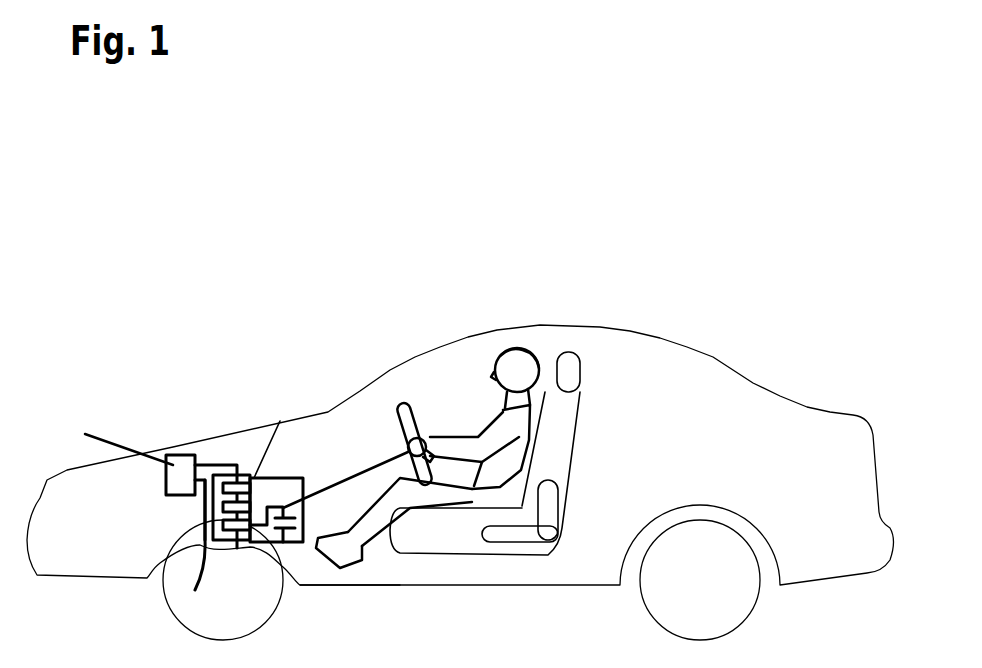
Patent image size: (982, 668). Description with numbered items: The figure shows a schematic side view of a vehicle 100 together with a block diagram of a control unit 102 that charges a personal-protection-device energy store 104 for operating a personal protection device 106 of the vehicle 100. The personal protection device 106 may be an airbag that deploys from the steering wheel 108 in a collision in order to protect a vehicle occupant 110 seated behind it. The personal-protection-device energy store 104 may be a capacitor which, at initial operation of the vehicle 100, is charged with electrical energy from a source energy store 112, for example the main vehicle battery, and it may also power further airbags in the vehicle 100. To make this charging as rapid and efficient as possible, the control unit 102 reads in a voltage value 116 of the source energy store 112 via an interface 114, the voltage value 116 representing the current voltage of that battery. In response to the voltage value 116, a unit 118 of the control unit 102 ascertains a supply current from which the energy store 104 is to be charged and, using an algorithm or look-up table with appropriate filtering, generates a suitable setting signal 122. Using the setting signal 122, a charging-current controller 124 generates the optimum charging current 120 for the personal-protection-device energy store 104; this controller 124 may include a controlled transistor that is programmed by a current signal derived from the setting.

The vehicle 100 is at (328, 410).
The control unit 102 is at (255, 478).
The personal-protection-device energy store 104 is at (307, 543).
The personal protection device 106 is at (415, 420).
The steering wheel 108 is at (396, 410).
The vehicle occupant 110 is at (510, 347).
The source energy store 112 is at (180, 455).
The interface 114 is at (297, 467).
The voltage value 116 is at (218, 475).
The unit 118 is at (222, 512).
The charging current 120 is at (195, 590).
The setting signal 122 is at (222, 517).
The charging-current controller 124 is at (237, 547).